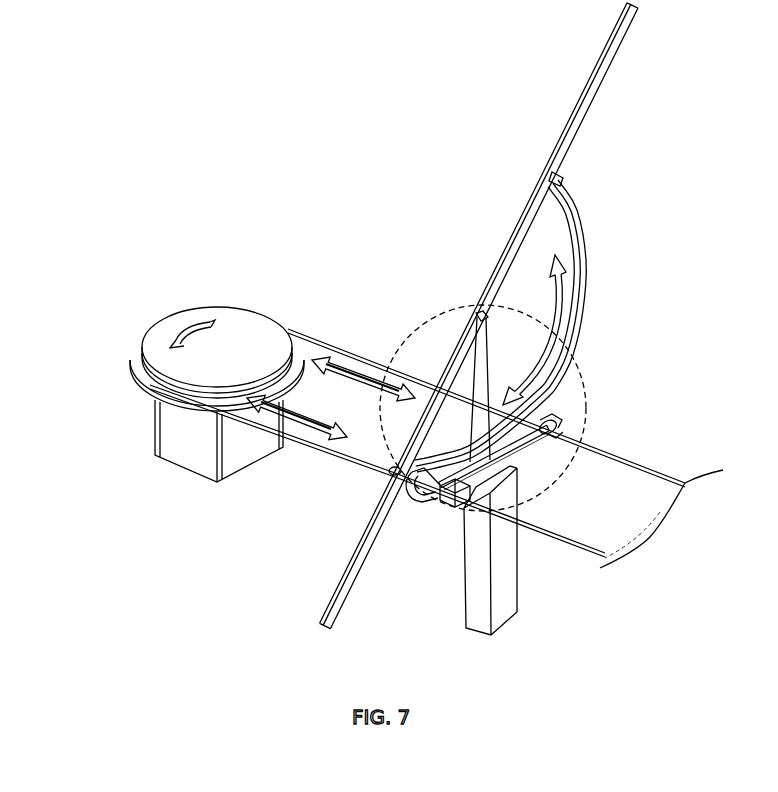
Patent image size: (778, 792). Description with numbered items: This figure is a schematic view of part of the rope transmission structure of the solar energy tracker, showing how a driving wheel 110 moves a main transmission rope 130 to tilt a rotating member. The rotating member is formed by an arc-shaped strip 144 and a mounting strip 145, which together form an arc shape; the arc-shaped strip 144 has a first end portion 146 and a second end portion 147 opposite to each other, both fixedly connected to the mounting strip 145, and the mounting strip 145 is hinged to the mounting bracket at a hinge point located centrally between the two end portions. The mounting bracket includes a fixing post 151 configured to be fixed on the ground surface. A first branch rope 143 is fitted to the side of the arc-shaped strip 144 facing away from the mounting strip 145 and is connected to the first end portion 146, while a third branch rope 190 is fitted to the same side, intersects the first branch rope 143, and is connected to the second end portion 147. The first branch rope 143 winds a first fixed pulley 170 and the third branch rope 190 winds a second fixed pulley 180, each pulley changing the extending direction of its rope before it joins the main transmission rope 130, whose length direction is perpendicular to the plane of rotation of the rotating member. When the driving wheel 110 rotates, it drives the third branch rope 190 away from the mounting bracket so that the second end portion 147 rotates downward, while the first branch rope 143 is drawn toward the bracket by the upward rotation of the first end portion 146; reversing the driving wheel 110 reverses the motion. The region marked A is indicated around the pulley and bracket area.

The driving wheel 110 is at (160, 355).
The main transmission rope 130 is at (312, 448).
The first branch rope 143 is at (548, 437).
The arc-shaped strip 144 is at (580, 273).
The mounting strip 145 is at (520, 248).
The first end portion 146 is at (393, 473).
The second end portion 147 is at (565, 178).
The fixing post 151 is at (500, 585).
The first fixed pulley 170 is at (556, 420).
The second fixed pulley 180 is at (435, 502).
The third branch rope 190 is at (463, 506).
The detail region A is at (575, 360).